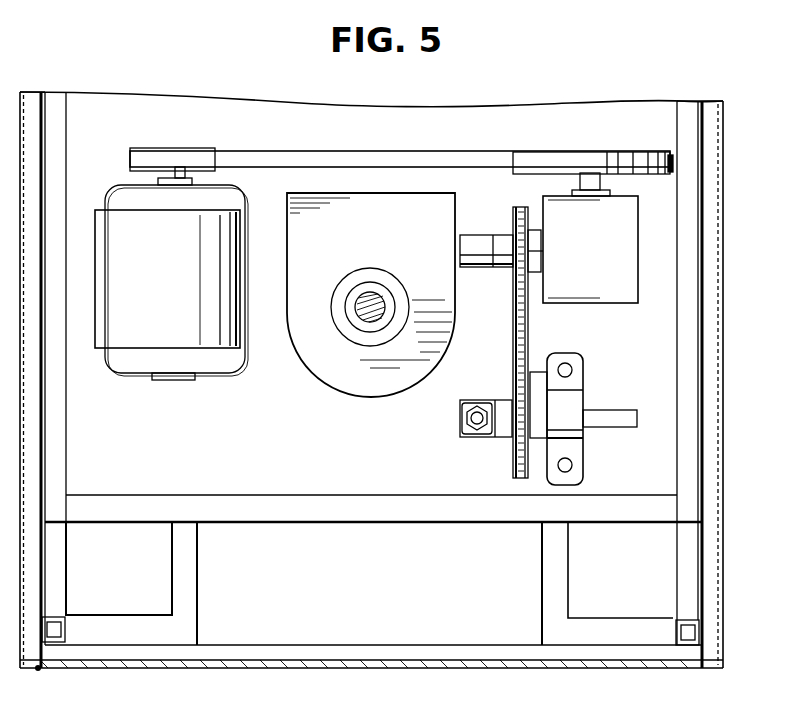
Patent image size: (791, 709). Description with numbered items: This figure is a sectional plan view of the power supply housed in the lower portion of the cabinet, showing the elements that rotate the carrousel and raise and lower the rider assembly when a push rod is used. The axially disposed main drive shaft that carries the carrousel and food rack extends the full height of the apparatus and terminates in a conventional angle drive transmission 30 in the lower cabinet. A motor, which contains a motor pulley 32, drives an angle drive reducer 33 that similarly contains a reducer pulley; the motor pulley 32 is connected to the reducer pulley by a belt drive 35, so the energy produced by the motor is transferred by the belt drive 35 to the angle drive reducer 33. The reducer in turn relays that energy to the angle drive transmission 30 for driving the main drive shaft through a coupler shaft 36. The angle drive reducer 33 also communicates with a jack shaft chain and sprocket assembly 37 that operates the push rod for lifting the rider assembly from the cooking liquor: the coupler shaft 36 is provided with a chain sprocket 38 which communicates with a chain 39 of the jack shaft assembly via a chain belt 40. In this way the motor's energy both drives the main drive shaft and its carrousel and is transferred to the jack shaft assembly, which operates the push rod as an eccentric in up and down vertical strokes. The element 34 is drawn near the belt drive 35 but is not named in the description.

The angle drive transmission 30 is at (424, 195).
The motor pulley 32 is at (182, 150).
The angle drive reducer 33 is at (638, 248).
The support bar bracket 34 is at (600, 152).
The belt drive 35 is at (383, 152).
The coupler shaft 36 is at (487, 235).
The jack shaft chain and sprocket assembly 37 is at (540, 390).
The chain sprocket 38 is at (532, 212).
The chain 39 is at (512, 458).
The chain belt 40 is at (530, 320).